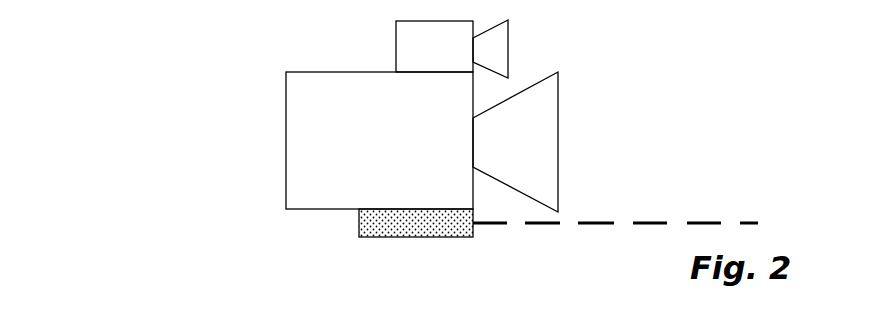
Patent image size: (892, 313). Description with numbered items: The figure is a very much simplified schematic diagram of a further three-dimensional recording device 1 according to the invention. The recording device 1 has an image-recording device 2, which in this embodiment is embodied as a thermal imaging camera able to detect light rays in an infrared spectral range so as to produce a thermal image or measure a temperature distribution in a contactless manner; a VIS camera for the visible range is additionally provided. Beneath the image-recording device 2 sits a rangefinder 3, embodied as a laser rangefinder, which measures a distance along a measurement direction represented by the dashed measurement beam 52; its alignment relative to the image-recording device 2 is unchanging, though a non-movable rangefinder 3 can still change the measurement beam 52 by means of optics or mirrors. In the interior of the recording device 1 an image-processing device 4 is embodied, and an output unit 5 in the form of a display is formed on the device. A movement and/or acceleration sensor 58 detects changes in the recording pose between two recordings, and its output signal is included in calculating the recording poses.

The 3D recording device 1 is at (360, 152).
The image-recording device 2 is at (594, 106).
The rangefinder 3 is at (372, 227).
The image-processing device 4 is at (305, 148).
The output unit 5 is at (271, 114).
The measurement beam 52 is at (547, 227).
The movement and/or acceleration sensor 58 is at (306, 175).